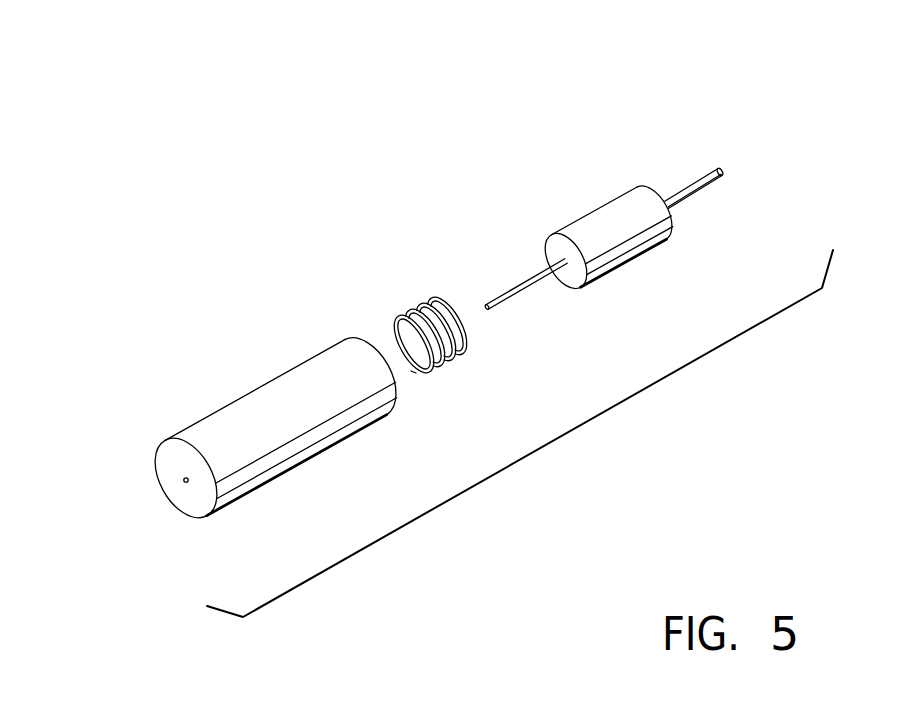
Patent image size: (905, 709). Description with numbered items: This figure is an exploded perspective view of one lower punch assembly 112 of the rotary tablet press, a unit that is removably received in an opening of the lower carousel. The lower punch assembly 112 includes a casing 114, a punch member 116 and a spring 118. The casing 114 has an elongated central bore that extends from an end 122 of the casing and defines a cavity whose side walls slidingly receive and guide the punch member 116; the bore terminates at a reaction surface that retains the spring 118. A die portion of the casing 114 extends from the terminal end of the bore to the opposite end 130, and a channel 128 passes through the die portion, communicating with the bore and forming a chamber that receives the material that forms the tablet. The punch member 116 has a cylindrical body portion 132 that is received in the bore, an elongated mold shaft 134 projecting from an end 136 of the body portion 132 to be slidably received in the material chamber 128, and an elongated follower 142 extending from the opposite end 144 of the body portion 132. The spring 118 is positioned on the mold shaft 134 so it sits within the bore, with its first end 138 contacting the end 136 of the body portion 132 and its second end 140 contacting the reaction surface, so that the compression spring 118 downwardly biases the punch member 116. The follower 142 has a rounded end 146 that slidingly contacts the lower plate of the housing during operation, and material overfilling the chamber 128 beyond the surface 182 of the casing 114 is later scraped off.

The lower punch assembly 112 is at (746, 98).
The casing 114 is at (257, 402).
The punch member 116 is at (603, 215).
The spring 118 is at (422, 307).
The end of the casing 122 is at (365, 338).
The channel 128 is at (183, 480).
The end of the casing 130 is at (157, 448).
The cylindrical body portion 132 is at (645, 257).
The mold shaft 134 is at (525, 281).
The end of the body portion 136 is at (573, 288).
The first end of the spring 138 is at (470, 337).
The second end of the spring 140 is at (407, 375).
The follower 142 is at (690, 187).
The end of the body portion 144 is at (680, 230).
The rounded end 146 is at (730, 173).
The surface of the casing 182 is at (193, 502).